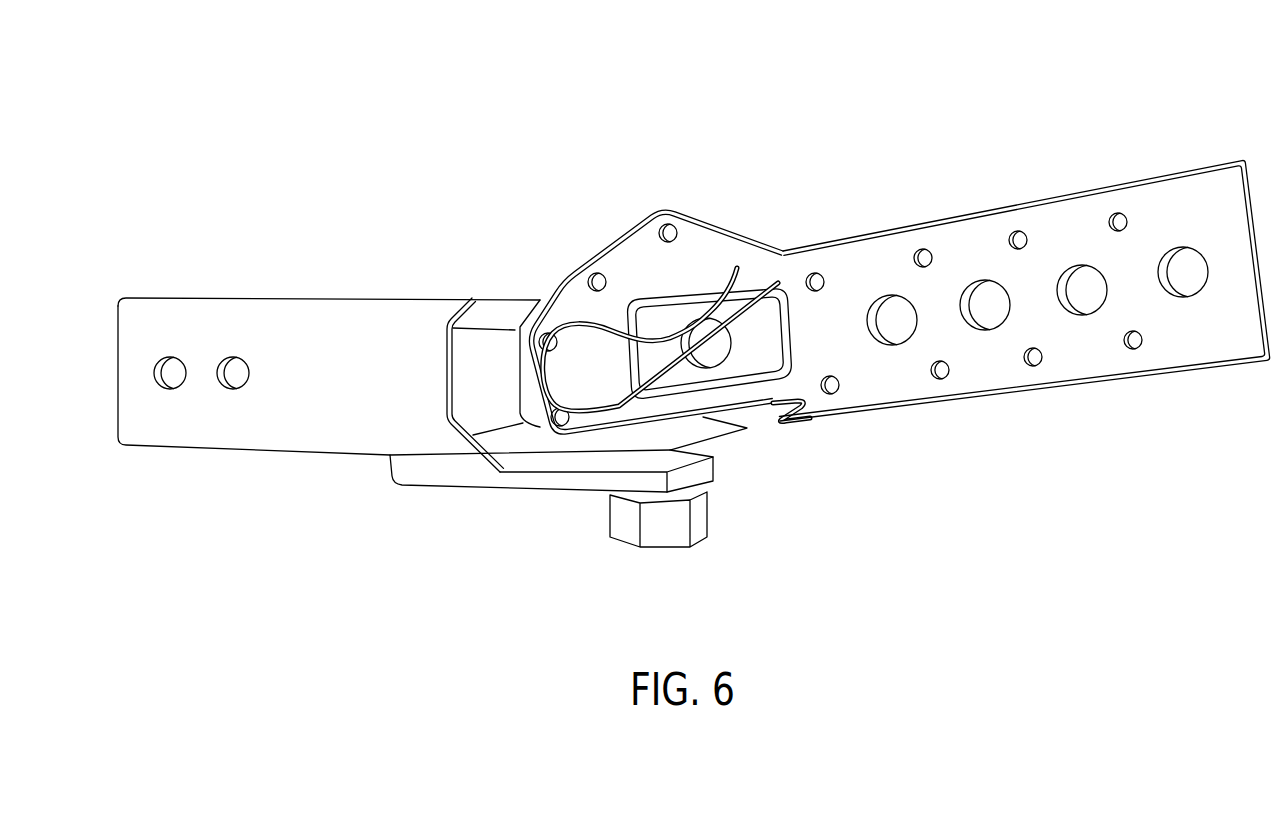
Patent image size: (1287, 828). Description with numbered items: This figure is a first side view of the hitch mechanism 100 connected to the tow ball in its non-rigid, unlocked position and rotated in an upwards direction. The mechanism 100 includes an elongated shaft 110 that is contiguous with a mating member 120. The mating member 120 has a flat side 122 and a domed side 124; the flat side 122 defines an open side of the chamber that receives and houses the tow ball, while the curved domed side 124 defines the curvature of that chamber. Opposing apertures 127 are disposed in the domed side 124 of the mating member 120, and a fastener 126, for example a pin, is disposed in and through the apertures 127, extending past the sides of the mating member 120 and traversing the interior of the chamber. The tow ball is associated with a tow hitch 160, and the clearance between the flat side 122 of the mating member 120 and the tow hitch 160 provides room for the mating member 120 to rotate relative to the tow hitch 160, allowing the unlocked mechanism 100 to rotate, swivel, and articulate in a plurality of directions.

The hitch mechanism 100 is at (866, 114).
The elongated shaft 110 is at (913, 410).
The mating member 120 is at (534, 198).
The flat side 122 is at (775, 380).
The domed side 124 is at (677, 207).
The fastener 126 is at (693, 337).
The aperture 127 is at (720, 363).
The tow hitch 160 is at (563, 458).